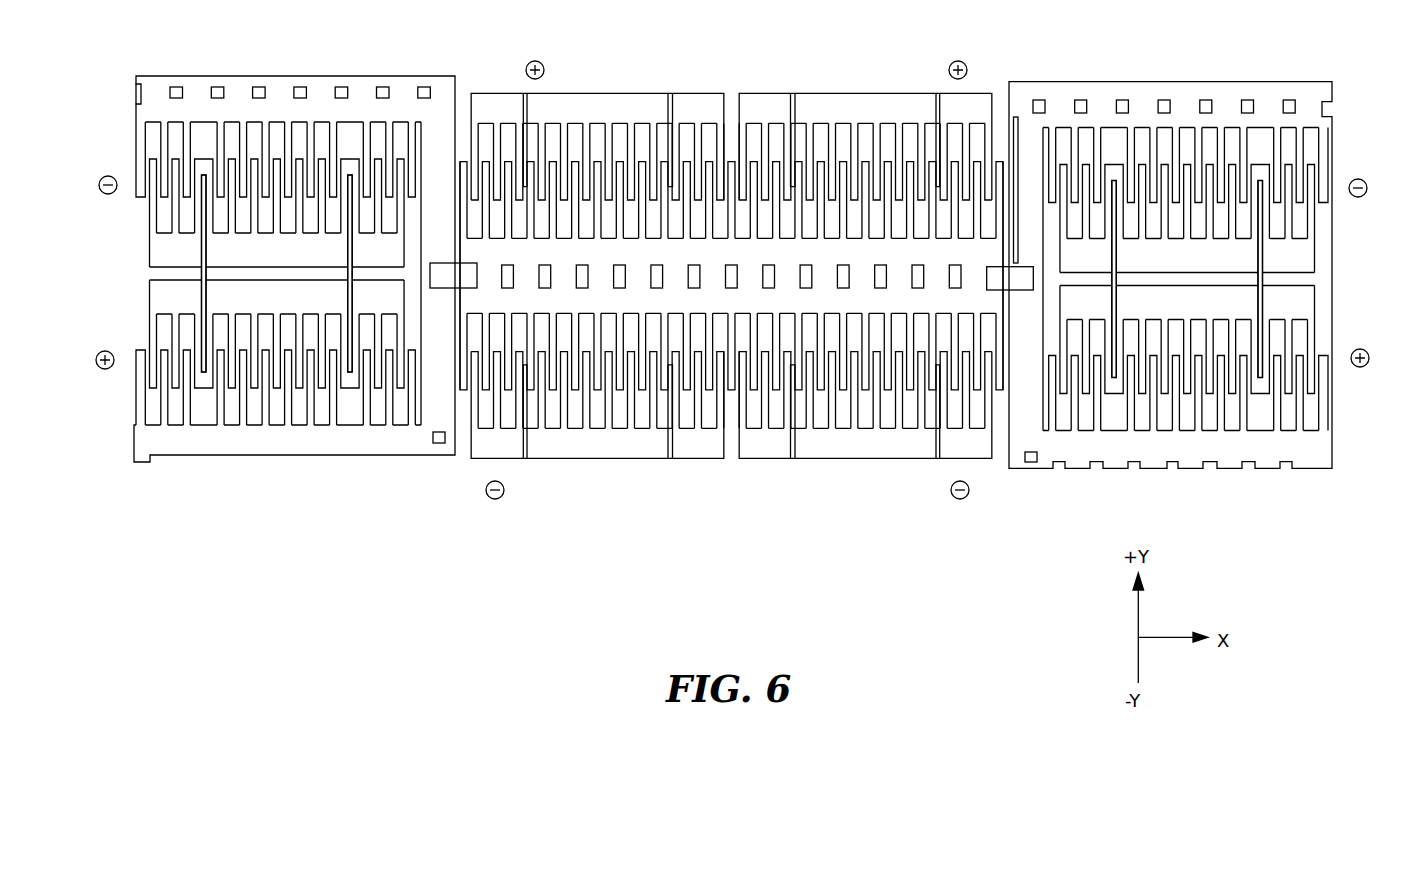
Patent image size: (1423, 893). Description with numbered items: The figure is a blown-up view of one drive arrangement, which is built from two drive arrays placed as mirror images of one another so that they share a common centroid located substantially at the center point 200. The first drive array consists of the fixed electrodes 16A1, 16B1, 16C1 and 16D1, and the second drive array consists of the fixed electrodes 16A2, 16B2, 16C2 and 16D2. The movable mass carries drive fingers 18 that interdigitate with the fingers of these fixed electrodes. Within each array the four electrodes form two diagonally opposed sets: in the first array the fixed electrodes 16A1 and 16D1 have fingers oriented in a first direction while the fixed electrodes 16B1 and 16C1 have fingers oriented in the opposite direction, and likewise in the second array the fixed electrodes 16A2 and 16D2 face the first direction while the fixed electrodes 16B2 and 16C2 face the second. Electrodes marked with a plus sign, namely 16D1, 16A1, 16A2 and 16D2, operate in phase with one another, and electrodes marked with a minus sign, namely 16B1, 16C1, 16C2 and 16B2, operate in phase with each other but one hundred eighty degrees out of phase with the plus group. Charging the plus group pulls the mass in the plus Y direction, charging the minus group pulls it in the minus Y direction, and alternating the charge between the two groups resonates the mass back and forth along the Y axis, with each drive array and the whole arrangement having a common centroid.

The drive fingers 18 is at (300, 76).
The fixed electrode 16A1 is at (818, 93).
The fixed electrode 16A2 is at (597, 93).
The fixed electrode 16B1 is at (1316, 255).
The fixed electrode 16B2 is at (150, 252).
The fixed electrode 16C1 is at (895, 458).
The fixed electrode 16C2 is at (578, 458).
The fixed electrode 16D1 is at (1316, 300).
The fixed electrode 16D2 is at (150, 290).
The center point 200 is at (731, 272).